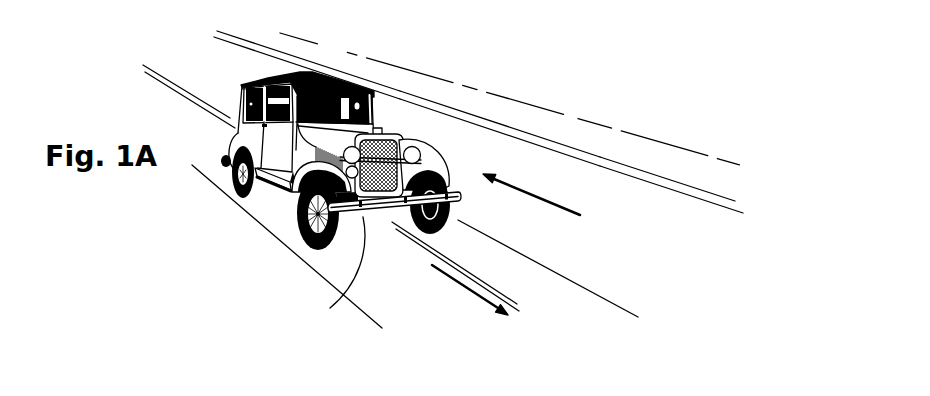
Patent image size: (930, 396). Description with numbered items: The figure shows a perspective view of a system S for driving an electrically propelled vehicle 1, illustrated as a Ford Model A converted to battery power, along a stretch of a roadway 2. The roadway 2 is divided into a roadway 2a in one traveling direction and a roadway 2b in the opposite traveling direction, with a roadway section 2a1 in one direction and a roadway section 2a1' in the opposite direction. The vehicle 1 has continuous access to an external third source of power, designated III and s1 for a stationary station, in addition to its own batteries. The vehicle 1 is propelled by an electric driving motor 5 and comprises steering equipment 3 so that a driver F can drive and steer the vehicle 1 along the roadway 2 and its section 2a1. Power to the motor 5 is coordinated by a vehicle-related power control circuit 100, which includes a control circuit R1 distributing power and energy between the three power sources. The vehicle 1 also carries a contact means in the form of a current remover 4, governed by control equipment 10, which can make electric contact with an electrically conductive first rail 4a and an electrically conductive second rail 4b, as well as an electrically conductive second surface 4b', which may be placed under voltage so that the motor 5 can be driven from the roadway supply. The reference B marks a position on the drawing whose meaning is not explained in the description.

The vehicle 1 is at (329, 129).
The stretch of a roadway 2 is at (382, 266).
The roadway in one traveling direction 2a is at (467, 281).
The roadway section in one traveling direction 2a1 is at (470, 294).
The roadway section in an opposite direction 2a1' is at (546, 153).
The roadway in an opposite traveling direction 2b is at (273, 57).
The steering equipment 3 is at (380, 108).
The vehicle related contact means as current remover 4 is at (287, 252).
The electrical conductive first rail 4a is at (712, 207).
The electrical conductive second rail 4b is at (698, 179).
The electrical conductive second surface 4b' is at (463, 263).
The vehicle related DC-motor 5 is at (388, 124).
The control equipment for contact means 10 is at (258, 197).
The power control circuit 100 is at (516, 238).
The control circuit distributing power R1 is at (435, 250).
The driver F is at (343, 102).
The system S is at (537, 100).
The vehicle base B is at (293, 208).
The stationary station s1 is at (585, 268).
The external third source of power III is at (512, 295).